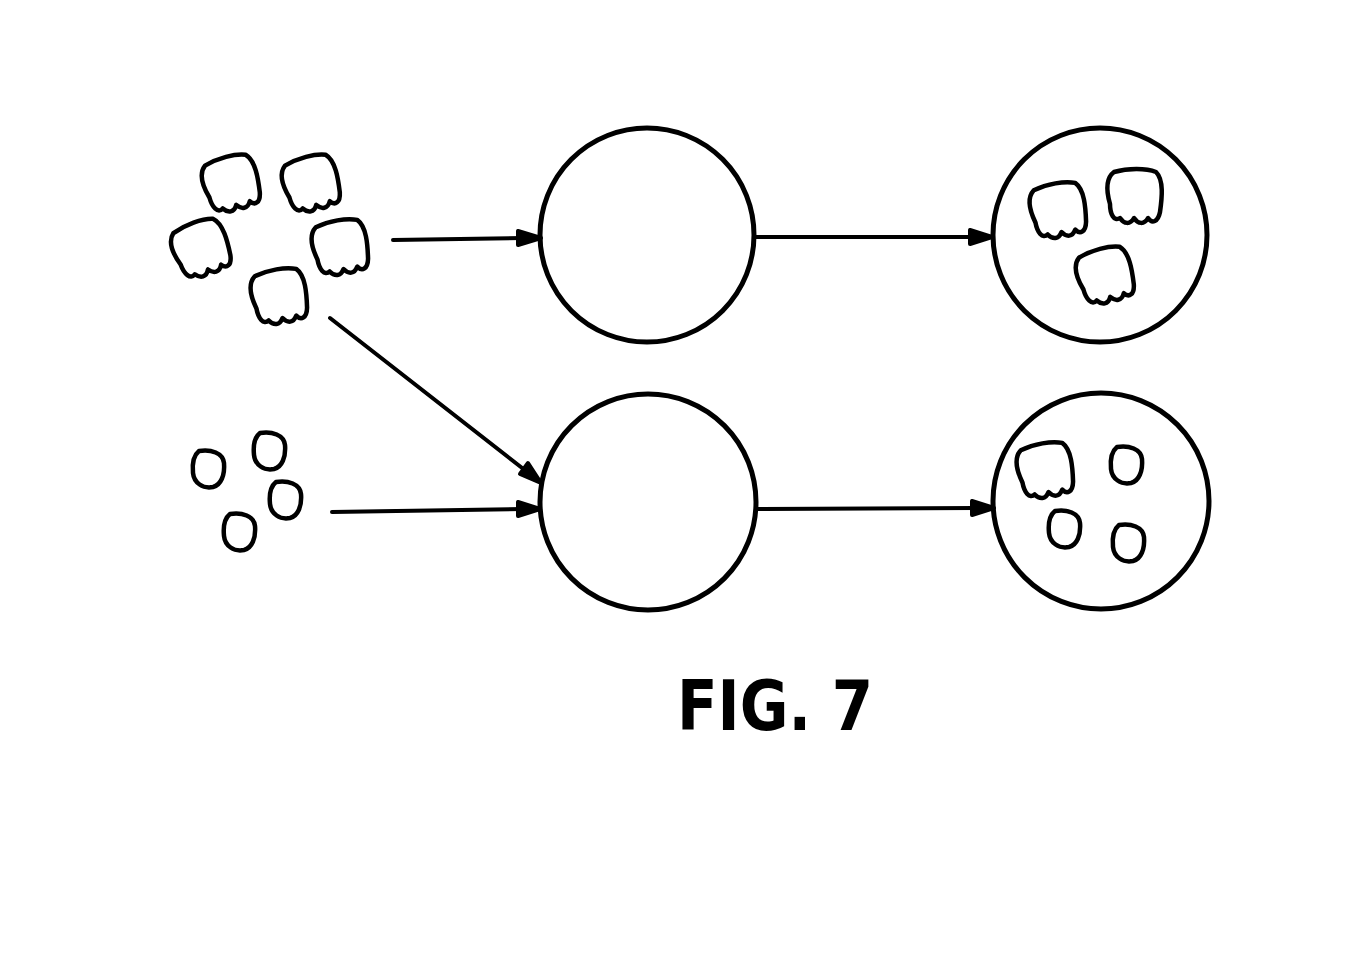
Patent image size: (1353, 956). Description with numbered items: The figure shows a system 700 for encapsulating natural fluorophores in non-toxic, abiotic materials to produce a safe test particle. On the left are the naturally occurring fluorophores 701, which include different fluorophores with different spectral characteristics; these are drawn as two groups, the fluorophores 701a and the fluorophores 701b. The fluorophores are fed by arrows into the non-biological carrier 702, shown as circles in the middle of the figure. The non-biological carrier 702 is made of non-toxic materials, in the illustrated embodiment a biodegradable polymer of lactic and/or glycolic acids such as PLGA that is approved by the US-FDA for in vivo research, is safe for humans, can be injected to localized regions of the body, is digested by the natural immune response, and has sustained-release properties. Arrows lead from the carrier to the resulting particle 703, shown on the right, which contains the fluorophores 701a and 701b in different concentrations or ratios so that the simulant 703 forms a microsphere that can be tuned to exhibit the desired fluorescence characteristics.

The encapsulation system 700 is at (768, 72).
The naturally occurring fluorophores 701 is at (153, 460).
The fluorophore 701a is at (230, 245).
The fluorophore 701b is at (257, 467).
The non-biological carrier 702 is at (677, 250).
The particle 703 is at (1207, 255).